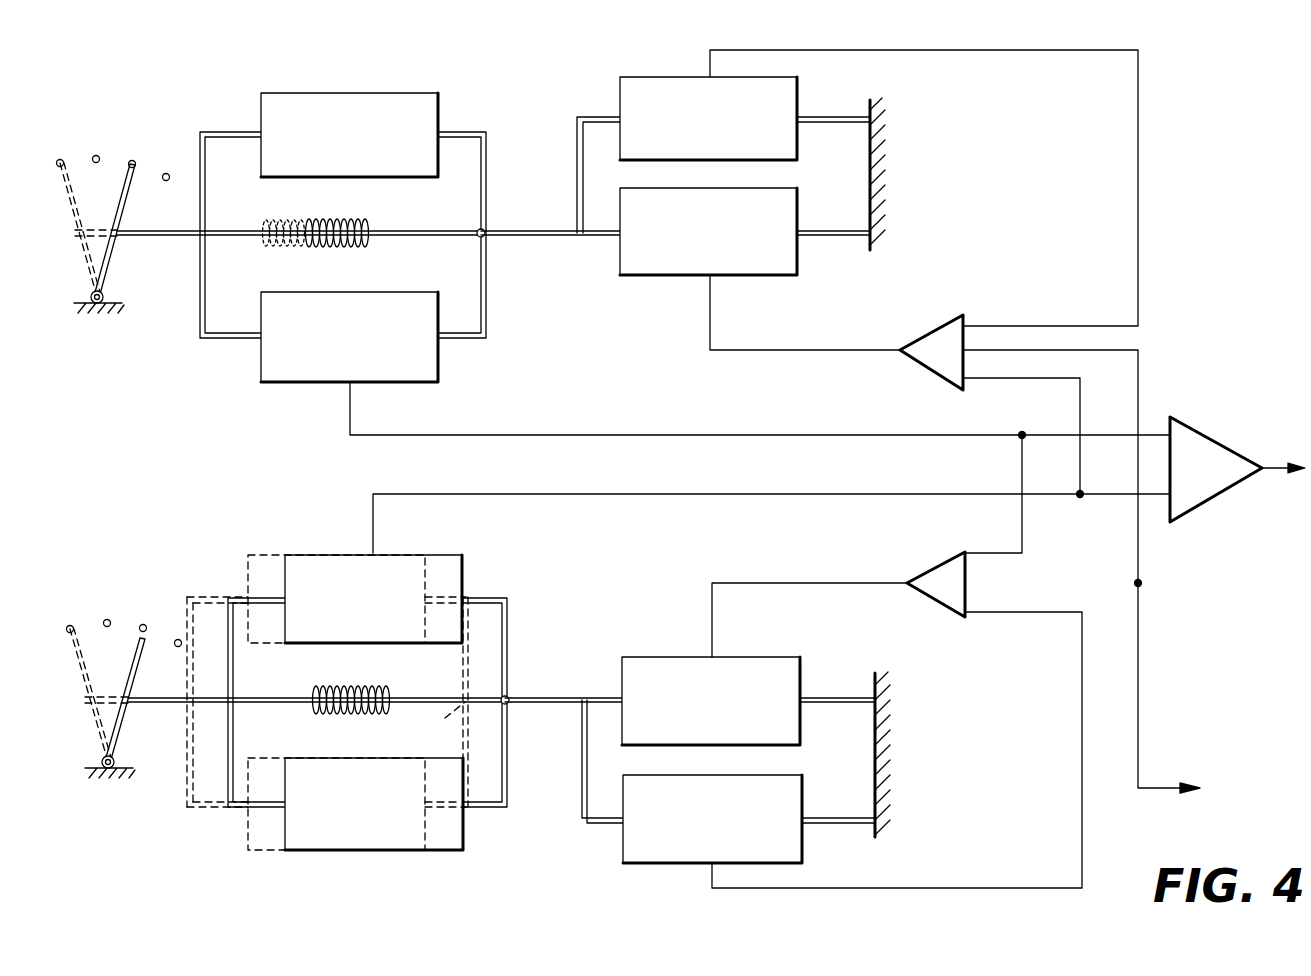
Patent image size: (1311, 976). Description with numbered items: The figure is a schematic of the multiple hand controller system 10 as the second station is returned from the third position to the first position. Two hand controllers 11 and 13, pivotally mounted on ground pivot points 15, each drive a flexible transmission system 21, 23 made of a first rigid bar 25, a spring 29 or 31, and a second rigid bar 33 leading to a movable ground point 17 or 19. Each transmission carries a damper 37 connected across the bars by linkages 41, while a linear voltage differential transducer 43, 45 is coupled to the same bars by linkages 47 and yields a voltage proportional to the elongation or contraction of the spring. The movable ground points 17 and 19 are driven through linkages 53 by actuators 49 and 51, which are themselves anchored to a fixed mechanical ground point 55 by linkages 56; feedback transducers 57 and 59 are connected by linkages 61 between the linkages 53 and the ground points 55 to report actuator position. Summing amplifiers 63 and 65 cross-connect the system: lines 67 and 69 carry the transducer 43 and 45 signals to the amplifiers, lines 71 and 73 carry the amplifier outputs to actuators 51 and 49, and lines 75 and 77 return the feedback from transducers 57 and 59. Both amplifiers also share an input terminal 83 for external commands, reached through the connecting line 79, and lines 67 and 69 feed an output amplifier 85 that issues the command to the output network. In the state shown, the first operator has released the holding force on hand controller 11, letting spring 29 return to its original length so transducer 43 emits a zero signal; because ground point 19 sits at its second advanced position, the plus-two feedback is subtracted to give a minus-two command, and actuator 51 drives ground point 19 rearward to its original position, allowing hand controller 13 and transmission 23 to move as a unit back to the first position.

The multiple hand controller system 10 is at (200, 422).
The hand controller 11 is at (118, 218).
The hand controller 13 is at (128, 686).
The ground pivot point 15 is at (90, 298).
The movable ground point 17 is at (485, 230).
The movable ground point 19 is at (508, 698).
The flexible transmission system 21 is at (258, 250).
The flexible transmission system 23 is at (285, 718).
The first rigid bar 25 is at (155, 237).
The spring 29 is at (280, 215).
The spring 31 is at (310, 688).
The second rigid bar 33 is at (400, 230).
The damper 37 is at (382, 93).
The linkage 41 is at (205, 132).
The linear voltage differential transducer 43 is at (330, 382).
The linear voltage differential transducer 45 is at (320, 555).
The linkage 47 is at (210, 338).
The actuator 49 is at (650, 275).
The actuator 51 is at (655, 657).
The linkage 53 is at (580, 240).
The mechanical ground point 55 is at (880, 165).
The linkage 56 is at (842, 238).
The linear voltage differential transducer 57 is at (630, 77).
The linear voltage differential transducer 59 is at (623, 860).
The linkage 61 is at (578, 117).
The summing amplifier 63 is at (932, 568).
The summing amplifier 65 is at (915, 345).
The electrical line 67 is at (620, 435).
The electrical line 69 is at (620, 494).
The electrical line 71 is at (812, 583).
The electrical line 73 is at (805, 350).
The line 75 is at (990, 50).
The line 77 is at (955, 888).
The output signal line 79 is at (1115, 355).
The input terminal 83 is at (1190, 788).
The output amplifier 85 is at (1195, 505).